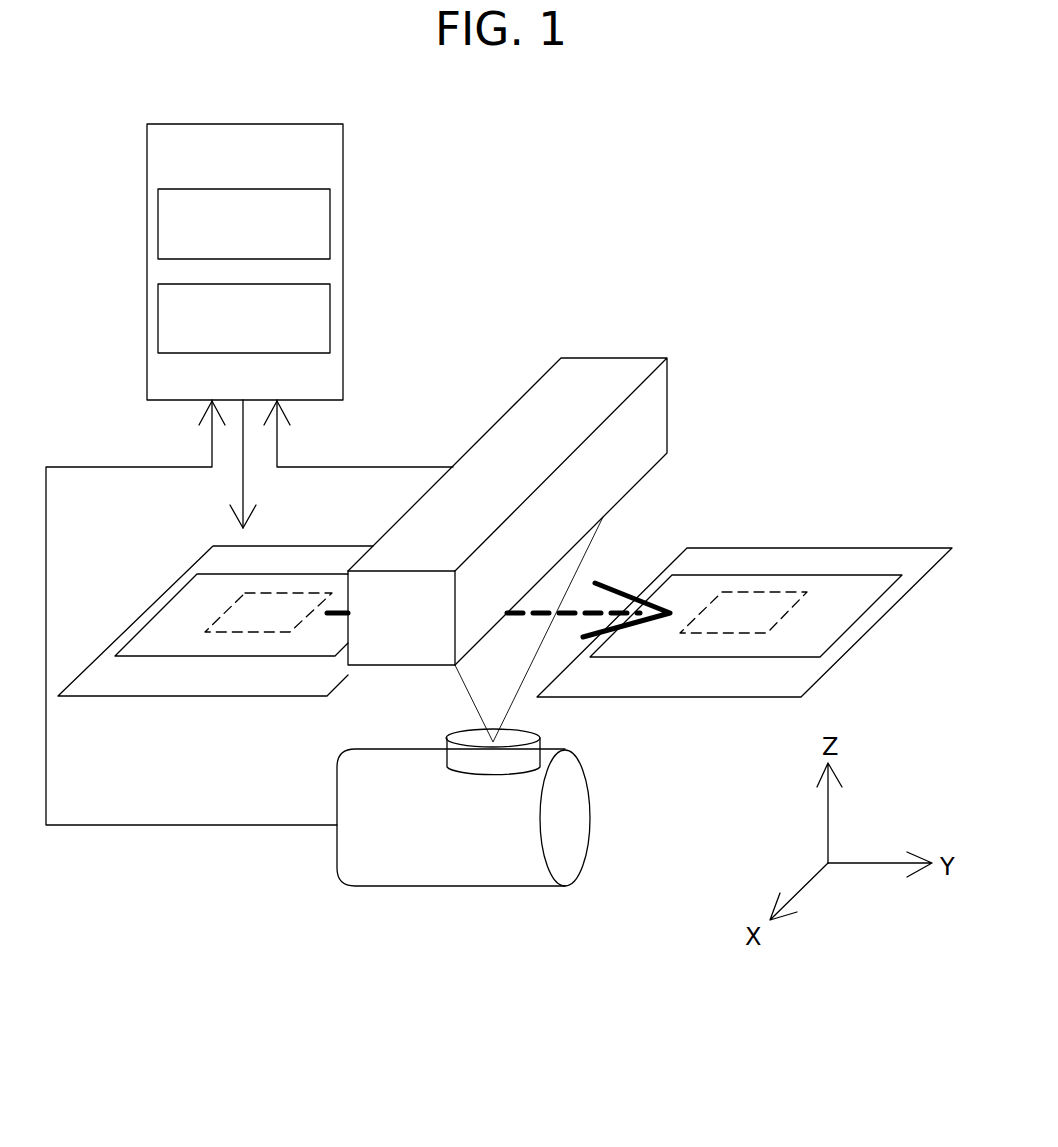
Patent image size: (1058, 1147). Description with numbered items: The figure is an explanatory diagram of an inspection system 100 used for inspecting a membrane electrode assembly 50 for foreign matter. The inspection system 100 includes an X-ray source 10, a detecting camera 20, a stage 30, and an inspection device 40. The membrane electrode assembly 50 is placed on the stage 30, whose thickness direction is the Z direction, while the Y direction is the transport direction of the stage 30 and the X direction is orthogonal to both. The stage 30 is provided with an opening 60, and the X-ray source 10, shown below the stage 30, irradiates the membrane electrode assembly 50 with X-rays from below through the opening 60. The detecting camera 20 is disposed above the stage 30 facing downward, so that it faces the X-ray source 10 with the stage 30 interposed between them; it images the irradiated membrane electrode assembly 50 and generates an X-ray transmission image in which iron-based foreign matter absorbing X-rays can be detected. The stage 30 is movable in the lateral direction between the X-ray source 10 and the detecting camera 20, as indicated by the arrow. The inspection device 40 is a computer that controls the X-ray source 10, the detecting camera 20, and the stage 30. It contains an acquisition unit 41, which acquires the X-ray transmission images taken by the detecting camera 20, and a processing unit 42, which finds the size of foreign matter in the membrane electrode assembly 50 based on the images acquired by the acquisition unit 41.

The X-ray source 10 is at (353, 790).
The detecting camera 20 is at (603, 373).
The stage 30 is at (837, 562).
The inspection device 40 is at (287, 260).
The acquisition unit 41 is at (330, 221).
The processing unit 42 is at (330, 314).
The membrane electrode assembly 50 is at (828, 615).
The opening 60 is at (727, 633).
The inspection system 100 is at (813, 342).